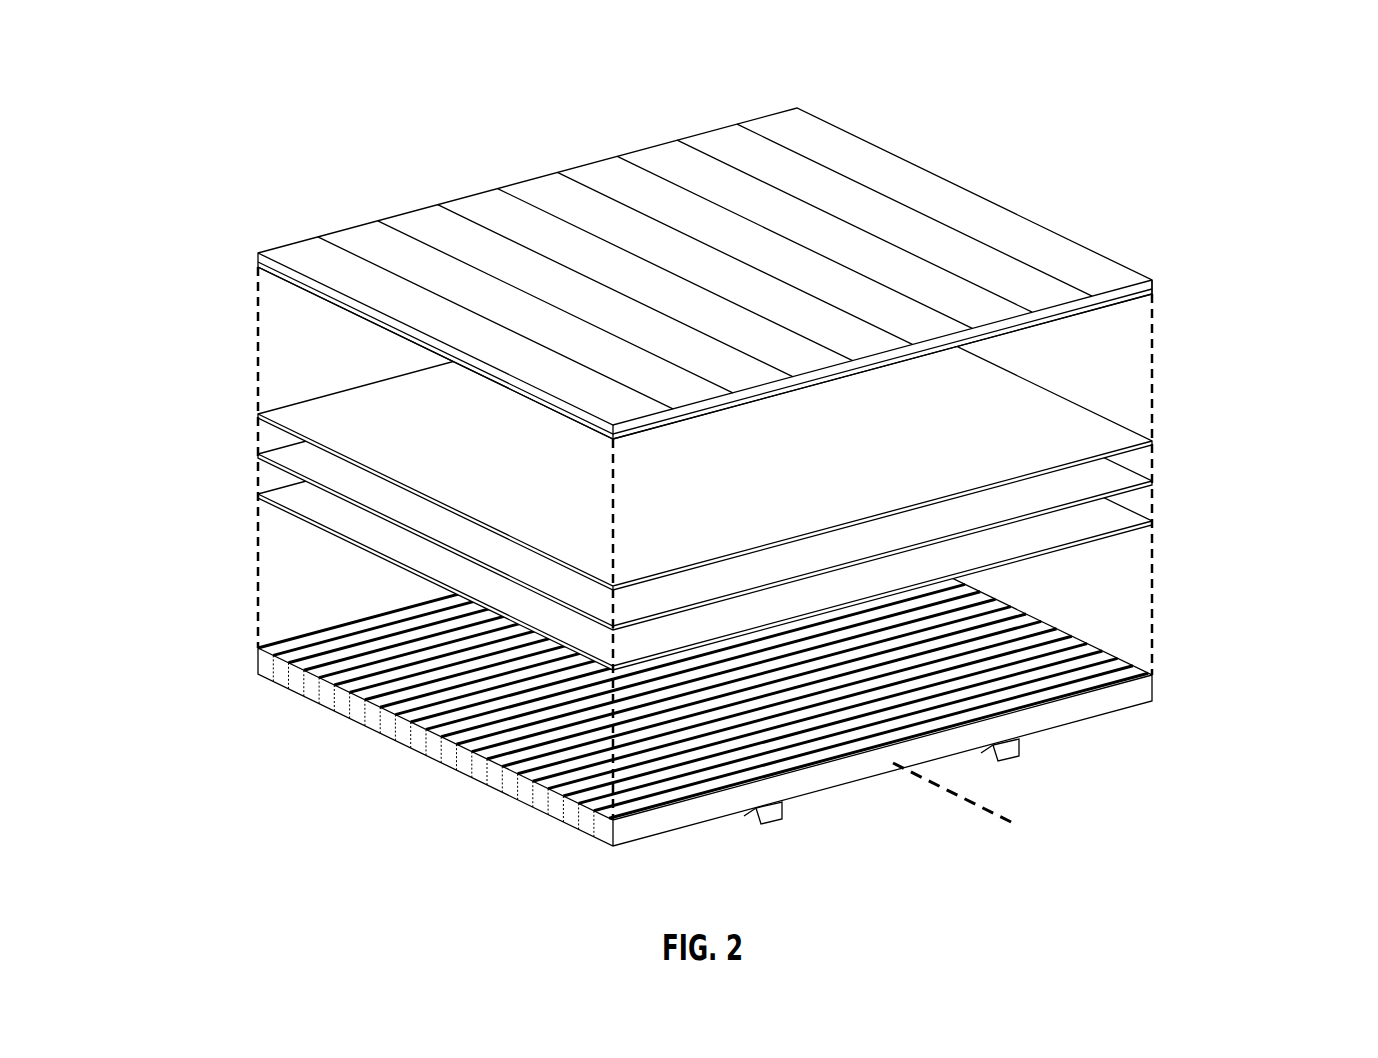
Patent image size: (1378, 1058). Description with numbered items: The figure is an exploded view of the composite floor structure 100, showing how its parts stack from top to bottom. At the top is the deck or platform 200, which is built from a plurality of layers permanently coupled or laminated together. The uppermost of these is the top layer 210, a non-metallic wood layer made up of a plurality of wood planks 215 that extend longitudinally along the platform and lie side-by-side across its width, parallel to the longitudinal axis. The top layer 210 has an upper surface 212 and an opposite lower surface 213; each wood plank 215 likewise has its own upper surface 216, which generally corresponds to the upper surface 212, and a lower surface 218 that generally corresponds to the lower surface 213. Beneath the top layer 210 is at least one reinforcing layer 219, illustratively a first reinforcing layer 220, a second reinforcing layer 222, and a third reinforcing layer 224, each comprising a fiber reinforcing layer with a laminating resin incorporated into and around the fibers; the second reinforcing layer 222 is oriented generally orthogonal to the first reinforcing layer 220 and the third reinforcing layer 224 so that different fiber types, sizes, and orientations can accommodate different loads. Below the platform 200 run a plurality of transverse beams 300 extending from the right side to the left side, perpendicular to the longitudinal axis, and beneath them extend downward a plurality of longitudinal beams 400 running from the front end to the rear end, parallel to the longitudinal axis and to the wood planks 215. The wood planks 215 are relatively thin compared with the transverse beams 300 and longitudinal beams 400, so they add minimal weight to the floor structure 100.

The composite floor structure 100 is at (719, 464).
The platform 200 is at (719, 371).
The top layer 210 is at (681, 255).
The upper surface 212 is at (1073, 260).
The lower surface 213 is at (1149, 330).
The wood planks 215 is at (603, 167).
The upper surface 216 is at (307, 250).
The lower surface 218 is at (306, 289).
The reinforcing layer 219 is at (613, 469).
The first reinforcing layer 220 is at (193, 518).
The second reinforcing layer 222 is at (480, 545).
The third reinforcing layer 224 is at (293, 498).
The transverse beams 300 is at (497, 743).
The longitudinal beams 400 is at (997, 758).